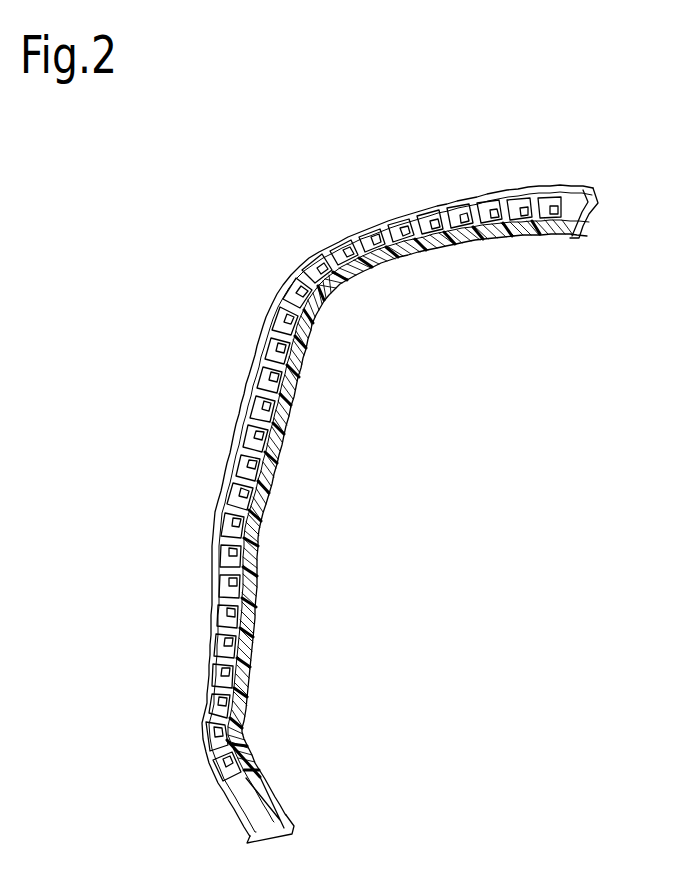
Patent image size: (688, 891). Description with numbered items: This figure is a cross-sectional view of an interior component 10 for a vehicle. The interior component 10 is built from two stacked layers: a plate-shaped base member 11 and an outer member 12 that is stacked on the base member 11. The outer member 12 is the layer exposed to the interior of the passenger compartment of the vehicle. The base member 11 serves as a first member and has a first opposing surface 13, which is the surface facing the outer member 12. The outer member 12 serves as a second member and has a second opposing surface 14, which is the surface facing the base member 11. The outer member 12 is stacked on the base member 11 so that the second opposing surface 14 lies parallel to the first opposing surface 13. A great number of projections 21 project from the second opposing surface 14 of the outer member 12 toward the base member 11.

The interior component 10 is at (205, 219).
The base member 11 is at (444, 249).
The outer member 12 is at (506, 194).
The first opposing surface 13 is at (225, 690).
The second opposing surface 14 is at (213, 603).
The projections 21 is at (263, 437).